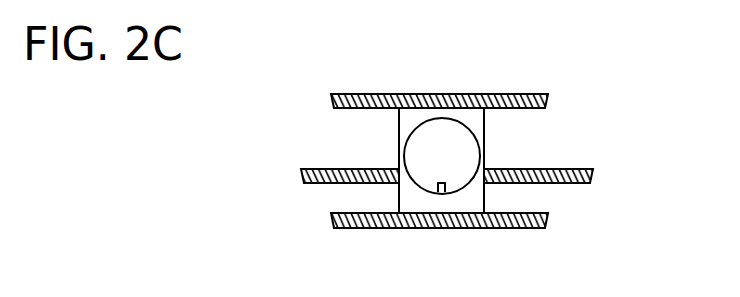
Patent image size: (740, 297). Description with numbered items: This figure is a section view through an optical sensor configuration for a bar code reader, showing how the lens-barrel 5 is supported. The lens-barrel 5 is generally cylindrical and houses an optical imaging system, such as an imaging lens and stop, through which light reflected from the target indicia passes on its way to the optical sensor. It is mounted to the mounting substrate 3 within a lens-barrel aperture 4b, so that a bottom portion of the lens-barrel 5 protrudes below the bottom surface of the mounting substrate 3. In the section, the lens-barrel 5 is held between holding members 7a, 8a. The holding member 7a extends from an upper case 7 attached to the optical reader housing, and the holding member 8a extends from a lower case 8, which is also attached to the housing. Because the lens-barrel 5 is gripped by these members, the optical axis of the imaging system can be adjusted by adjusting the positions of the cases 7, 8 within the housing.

The mounting substrate 3 is at (585, 173).
The lens-barrel aperture 4b is at (398, 183).
The lens-barrel 5 is at (420, 143).
The upper case 7 is at (463, 94).
The holding member 7a is at (474, 120).
The lower case 8 is at (430, 229).
The holding member 8a is at (462, 200).